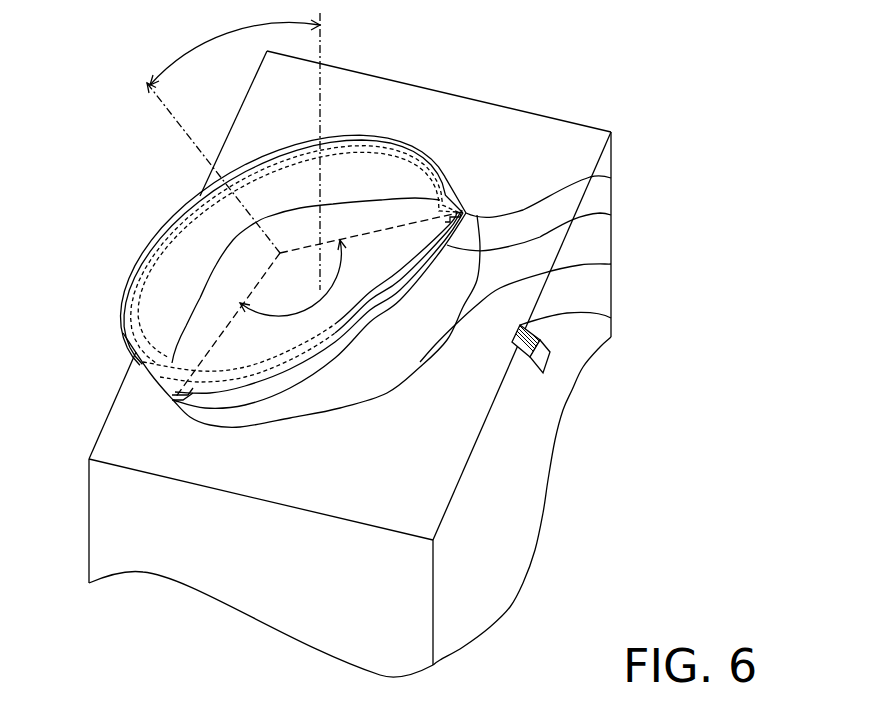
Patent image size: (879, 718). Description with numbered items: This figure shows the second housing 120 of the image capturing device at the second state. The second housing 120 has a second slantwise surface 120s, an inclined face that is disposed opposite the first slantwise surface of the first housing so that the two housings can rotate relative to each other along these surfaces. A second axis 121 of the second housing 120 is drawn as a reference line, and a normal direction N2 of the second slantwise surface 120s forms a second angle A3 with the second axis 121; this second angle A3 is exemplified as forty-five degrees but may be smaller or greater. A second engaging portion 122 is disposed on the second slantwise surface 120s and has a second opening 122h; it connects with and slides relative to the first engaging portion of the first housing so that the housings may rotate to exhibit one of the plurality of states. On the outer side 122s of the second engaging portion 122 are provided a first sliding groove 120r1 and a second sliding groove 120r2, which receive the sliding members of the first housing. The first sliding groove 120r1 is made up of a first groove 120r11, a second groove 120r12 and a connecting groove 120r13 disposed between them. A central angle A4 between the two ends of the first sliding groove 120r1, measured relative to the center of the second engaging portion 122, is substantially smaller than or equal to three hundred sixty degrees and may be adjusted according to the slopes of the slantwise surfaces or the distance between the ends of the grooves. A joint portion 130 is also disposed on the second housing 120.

The second housing 120 is at (595, 292).
The second slantwise surface 120s is at (497, 123).
The first sliding groove 120r1 is at (596, 265).
The first groove 120r11 is at (611, 264).
The second groove 120r12 is at (611, 178).
The connecting groove 120r13 is at (611, 215).
The second sliding groove 120r2 is at (172, 238).
The second axis 121 is at (322, 43).
The second engaging portion 122 is at (287, 218).
The second opening 122h is at (357, 225).
The outer side 122s is at (208, 418).
The joint portion 130 is at (611, 318).
The normal direction N2 is at (198, 153).
The second angle A3 is at (235, 49).
The central angle A4 is at (318, 305).